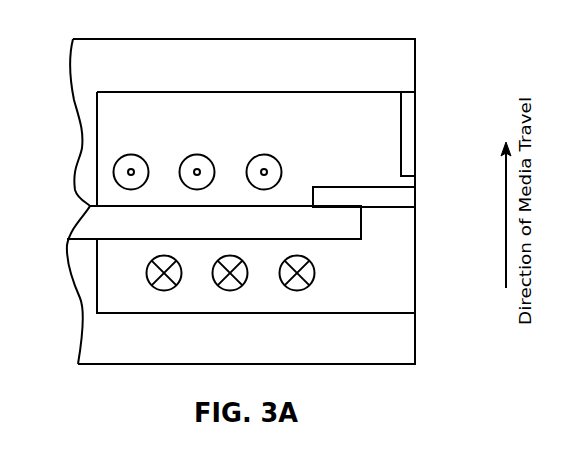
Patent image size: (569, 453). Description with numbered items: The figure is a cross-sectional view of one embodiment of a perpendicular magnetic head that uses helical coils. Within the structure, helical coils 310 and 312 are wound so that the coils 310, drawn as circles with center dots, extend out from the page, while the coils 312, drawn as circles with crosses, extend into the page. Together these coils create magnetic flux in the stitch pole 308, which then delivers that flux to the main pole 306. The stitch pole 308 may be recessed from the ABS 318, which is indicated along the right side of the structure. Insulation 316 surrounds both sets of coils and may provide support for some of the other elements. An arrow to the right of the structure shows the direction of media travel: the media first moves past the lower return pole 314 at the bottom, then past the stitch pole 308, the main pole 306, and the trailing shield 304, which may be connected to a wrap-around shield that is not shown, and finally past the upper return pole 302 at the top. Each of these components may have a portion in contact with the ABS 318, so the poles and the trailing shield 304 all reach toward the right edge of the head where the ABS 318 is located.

The upper return pole 302 is at (327, 77).
The trailing shield 304 is at (416, 137).
The main pole 306 is at (416, 192).
The stitch pole 308 is at (273, 233).
The helical coils 310 is at (130, 155).
The helical coils 312 is at (147, 280).
The lower return pole 314 is at (272, 348).
The insulation 316 is at (364, 147).
The ABS 318 is at (416, 60).